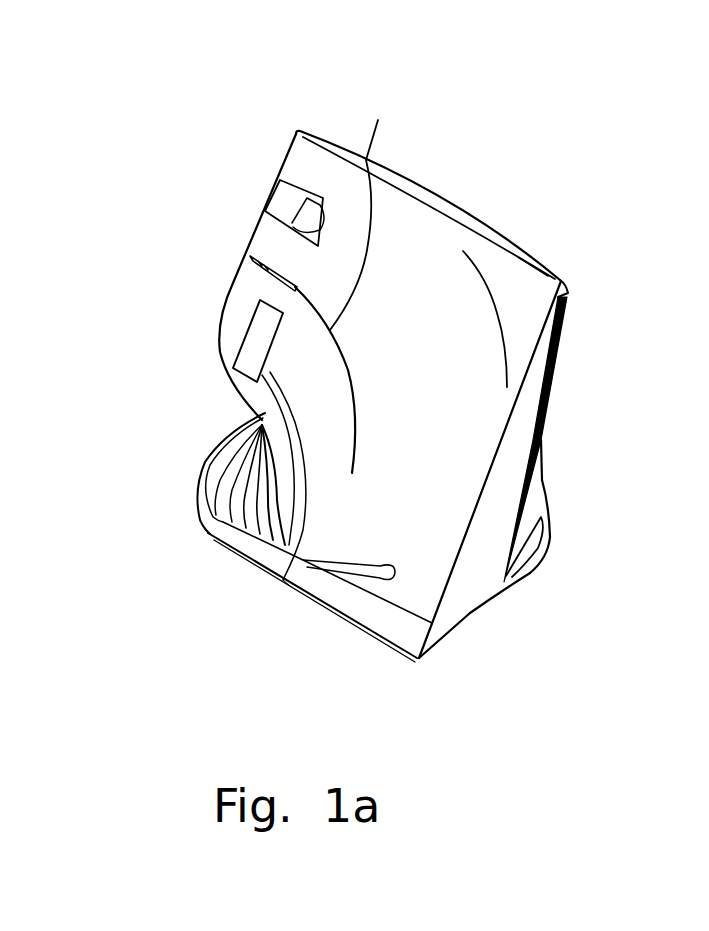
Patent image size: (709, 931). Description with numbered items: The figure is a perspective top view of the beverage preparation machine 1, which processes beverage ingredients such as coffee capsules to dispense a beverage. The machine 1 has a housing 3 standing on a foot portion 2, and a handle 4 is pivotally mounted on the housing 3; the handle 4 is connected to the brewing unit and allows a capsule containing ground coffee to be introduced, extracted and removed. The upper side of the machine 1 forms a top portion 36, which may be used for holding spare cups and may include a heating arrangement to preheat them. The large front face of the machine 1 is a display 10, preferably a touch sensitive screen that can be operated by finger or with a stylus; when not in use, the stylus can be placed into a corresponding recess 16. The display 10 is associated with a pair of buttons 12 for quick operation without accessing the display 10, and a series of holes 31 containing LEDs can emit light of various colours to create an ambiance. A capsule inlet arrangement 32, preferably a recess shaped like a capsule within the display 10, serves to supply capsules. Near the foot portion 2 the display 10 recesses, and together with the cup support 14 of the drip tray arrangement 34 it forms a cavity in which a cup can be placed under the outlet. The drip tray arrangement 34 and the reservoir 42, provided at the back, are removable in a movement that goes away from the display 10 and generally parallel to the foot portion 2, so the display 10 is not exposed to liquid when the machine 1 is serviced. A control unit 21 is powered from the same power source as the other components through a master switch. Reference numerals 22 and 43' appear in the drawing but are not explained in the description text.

The beverage preparation machine 1 is at (543, 120).
The foot portion 2 is at (401, 658).
The housing 3 is at (458, 597).
The handle 4 is at (260, 340).
The display 10 is at (426, 300).
The buttons 12 is at (250, 256).
The cup support 14 is at (225, 463).
The recess 16 is at (377, 583).
The control unit 21 is at (565, 303).
The top face 22 is at (437, 195).
The holes 31 is at (378, 120).
The capsule inlet arrangement 32 is at (288, 205).
The drip tray arrangement 34 is at (227, 532).
The top portion 36 is at (518, 257).
The reservoir 42 is at (537, 492).
The cable bundle 43' is at (216, 464).